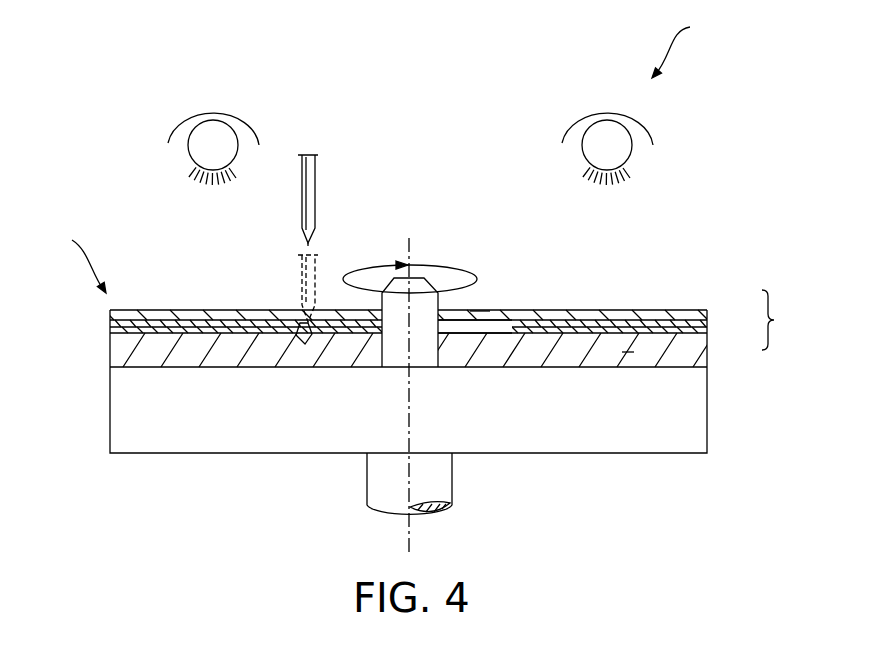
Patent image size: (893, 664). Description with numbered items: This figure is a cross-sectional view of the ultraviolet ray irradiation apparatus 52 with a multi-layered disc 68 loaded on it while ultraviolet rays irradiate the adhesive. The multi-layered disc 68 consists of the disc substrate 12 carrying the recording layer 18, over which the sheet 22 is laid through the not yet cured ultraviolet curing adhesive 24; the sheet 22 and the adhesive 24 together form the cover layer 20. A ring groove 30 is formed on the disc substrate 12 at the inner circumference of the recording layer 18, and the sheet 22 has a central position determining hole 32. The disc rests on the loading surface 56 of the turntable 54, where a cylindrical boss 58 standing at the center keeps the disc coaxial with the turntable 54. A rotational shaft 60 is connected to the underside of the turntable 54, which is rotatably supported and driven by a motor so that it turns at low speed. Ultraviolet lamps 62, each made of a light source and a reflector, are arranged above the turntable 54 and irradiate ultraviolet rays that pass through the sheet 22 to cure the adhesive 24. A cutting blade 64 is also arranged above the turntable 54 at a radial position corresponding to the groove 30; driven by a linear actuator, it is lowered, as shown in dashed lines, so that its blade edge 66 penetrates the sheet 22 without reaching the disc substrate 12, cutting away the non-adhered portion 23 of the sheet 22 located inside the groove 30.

The disc substrate 12 is at (110, 350).
The recording layer 18 is at (112, 327).
The cover layer 20 is at (781, 320).
The sheet 22 is at (710, 312).
The non-adhered portion 23 is at (480, 314).
The ultraviolet curing adhesive 24 is at (710, 326).
The groove 30 is at (512, 330).
The position determining hole 32 is at (390, 301).
The ultraviolet ray irradiation apparatus 52 is at (685, 44).
The turntable 54 is at (709, 401).
The loading surface 56 is at (628, 350).
The boss 58 is at (432, 284).
The rotational shaft 60 is at (367, 497).
The ultraviolet lamps 62 is at (175, 130).
The cutting blade 64 is at (315, 200).
The blade edge 66 is at (312, 245).
The multi-layered disc 68 is at (76, 256).